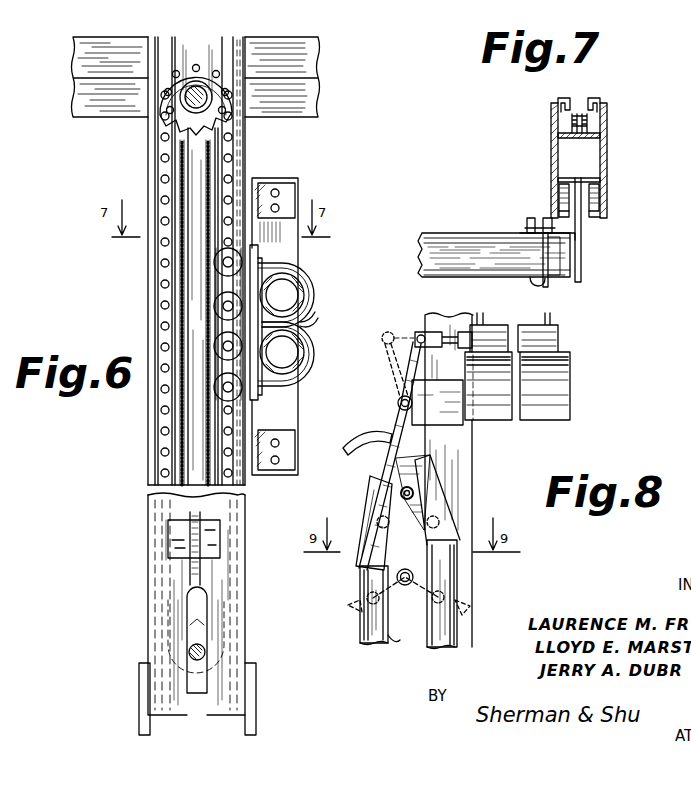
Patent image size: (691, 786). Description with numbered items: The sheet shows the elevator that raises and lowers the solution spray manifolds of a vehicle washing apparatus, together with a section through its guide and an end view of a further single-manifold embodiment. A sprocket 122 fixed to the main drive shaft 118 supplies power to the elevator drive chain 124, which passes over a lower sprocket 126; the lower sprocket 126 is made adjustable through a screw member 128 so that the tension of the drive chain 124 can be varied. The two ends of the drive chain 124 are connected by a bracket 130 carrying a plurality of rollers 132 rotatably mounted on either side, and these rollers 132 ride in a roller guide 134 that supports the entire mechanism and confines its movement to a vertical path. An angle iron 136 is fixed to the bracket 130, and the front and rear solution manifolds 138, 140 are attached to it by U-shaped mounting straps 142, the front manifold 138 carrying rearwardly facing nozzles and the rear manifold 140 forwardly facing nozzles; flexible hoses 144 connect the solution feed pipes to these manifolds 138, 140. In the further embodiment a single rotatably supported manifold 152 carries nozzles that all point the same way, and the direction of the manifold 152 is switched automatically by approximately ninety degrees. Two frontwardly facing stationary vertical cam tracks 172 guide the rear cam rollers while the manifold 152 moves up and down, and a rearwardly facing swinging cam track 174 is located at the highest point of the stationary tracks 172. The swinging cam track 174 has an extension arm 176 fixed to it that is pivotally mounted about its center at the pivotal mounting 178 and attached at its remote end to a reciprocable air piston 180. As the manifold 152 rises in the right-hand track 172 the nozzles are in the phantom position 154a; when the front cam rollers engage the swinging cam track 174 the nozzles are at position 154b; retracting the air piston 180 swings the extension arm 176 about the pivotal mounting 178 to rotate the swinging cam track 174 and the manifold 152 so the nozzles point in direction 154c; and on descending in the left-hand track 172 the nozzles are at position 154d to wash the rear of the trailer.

In FIG. 6, the main drive shaft 118 is at (186, 92).
In FIG. 6, the sprocket 122 is at (182, 82).
In FIG. 6, the elevator drive chain 124 is at (164, 156).
In FIG. 7, the elevator drive chain 124 is at (588, 119).
In FIG. 6, the lower sprocket 126 is at (196, 630).
In FIG. 6, the screw member 128 is at (186, 527).
In FIG. 6, the bracket 130 is at (256, 272).
In FIG. 7, the bracket 130 is at (583, 252).
In FIG. 6, the rollers 132 is at (214, 263).
In FIG. 7, the rollers 132 is at (556, 197).
In FIG. 6, the roller guide 134 is at (241, 162).
In FIG. 7, the roller guide 134 is at (598, 220).
In FIG. 6, the angle iron 136 is at (256, 256).
In FIG. 7, the angle iron 136 is at (554, 272).
In FIG. 6, the front solution manifold 138 is at (303, 288).
In FIG. 7, the front solution manifold 138 is at (480, 236).
In FIG. 6, the rear solution manifold 140 is at (308, 345).
In FIG. 6, the U-shaped mounting straps 142 is at (306, 322).
In FIG. 7, the U-shaped mounting straps 142 is at (536, 278).
In FIG. 8, the flexible hoses 144 is at (372, 440).
In FIG. 8, the single manifold 152 is at (413, 493).
In FIG. 8, the solution spray nozzle position 154a is at (470, 608).
In FIG. 8, the solution spray nozzle position 154b is at (470, 528).
In FIG. 8, the solution spray nozzle position 154c is at (367, 531).
In FIG. 8, the solution spray nozzle position 154d is at (355, 606).
In FIG. 8, the stationary vertical cam tracks 172 is at (400, 640).
In FIG. 8, the swinging cam track 174 is at (370, 491).
In FIG. 8, the extension arm 176 is at (384, 462).
In FIG. 8, the pivotal mounting 178 is at (398, 403).
In FIG. 8, the air piston 180 is at (548, 337).